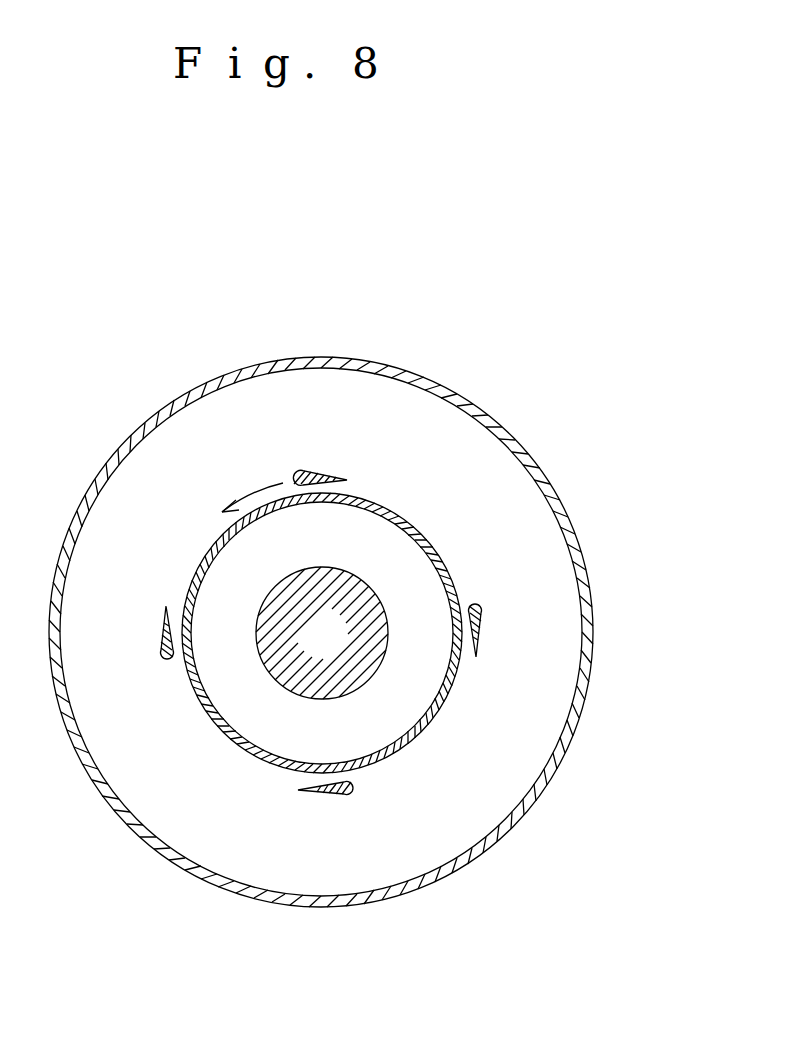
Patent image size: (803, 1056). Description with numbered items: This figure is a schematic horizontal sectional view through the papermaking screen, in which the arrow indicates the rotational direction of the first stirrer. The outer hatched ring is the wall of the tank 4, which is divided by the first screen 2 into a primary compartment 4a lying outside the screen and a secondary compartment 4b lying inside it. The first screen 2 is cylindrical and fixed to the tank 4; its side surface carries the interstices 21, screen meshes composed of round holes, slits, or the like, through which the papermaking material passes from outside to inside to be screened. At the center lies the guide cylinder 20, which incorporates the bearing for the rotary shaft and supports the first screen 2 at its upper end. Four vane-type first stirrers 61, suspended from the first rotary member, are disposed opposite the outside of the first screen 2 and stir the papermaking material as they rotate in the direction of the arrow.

The tank 4 is at (566, 524).
The primary compartment 4a is at (346, 429).
The secondary compartment 4b is at (342, 553).
The first screen 2 is at (443, 562).
The interstices 21 is at (400, 518).
The guide cylinder 20 is at (349, 657).
The first stirrers 61 is at (327, 470).